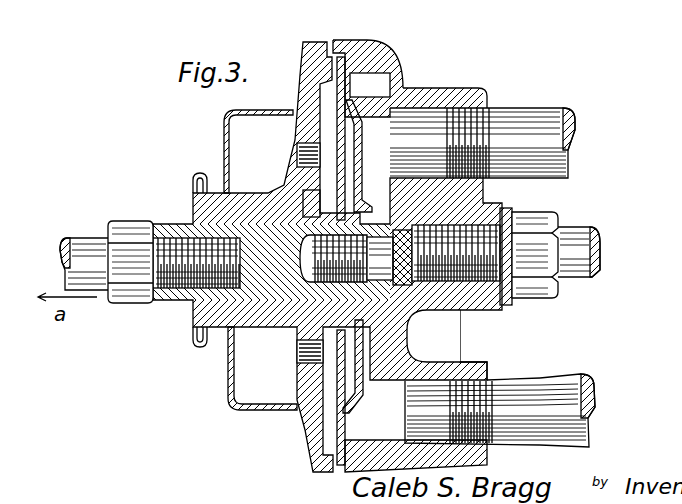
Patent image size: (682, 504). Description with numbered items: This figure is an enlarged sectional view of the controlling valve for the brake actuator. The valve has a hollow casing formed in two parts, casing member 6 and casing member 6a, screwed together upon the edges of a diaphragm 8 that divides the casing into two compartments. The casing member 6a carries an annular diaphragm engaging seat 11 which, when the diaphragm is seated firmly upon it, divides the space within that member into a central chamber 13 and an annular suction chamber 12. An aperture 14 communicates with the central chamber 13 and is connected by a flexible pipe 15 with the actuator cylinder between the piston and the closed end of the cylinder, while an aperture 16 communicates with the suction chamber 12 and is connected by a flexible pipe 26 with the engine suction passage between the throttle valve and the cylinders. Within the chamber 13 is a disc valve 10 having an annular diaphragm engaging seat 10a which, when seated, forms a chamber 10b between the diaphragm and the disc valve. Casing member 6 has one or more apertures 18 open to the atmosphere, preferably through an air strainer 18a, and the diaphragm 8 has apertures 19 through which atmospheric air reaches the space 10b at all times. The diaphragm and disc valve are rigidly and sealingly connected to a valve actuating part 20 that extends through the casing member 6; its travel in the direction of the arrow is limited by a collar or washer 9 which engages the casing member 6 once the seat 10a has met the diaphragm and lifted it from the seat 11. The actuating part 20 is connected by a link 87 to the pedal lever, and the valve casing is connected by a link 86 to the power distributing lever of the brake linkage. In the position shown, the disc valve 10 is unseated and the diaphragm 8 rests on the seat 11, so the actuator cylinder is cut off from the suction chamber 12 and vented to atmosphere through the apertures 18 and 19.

The casing member 6 is at (311, 46).
The casing member 6a is at (370, 52).
The diaphragm 8 is at (348, 395).
The collar or washer 9 is at (330, 200).
The disc valve 10 is at (372, 347).
The annular diaphragm engaging seat 10a is at (487, 366).
The chamber 10b is at (350, 163).
The annular diaphragm engaging seat 11 is at (355, 98).
The annular suction chamber 12 is at (343, 470).
The central chamber 13 is at (380, 130).
The aperture 14 is at (488, 93).
The flexible pipe 15 is at (570, 148).
The aperture 16 is at (440, 407).
The apertures 18 is at (294, 364).
The air strainer 18a is at (231, 368).
The apertures 19 is at (343, 352).
The valve actuating part 20 is at (180, 300).
The flexible pipe 26 is at (592, 420).
The link 86 is at (598, 244).
The link 87 is at (60, 262).